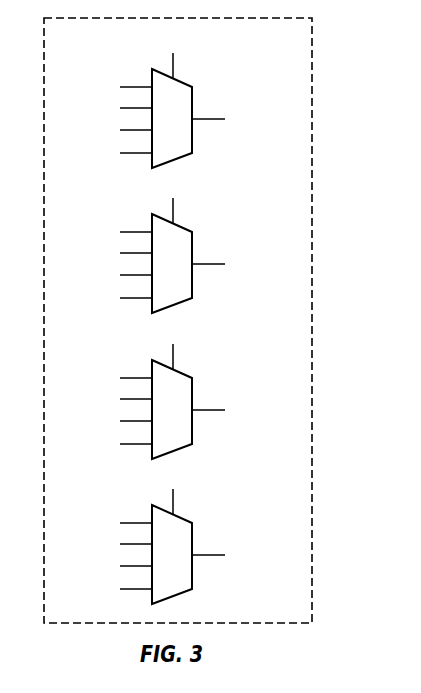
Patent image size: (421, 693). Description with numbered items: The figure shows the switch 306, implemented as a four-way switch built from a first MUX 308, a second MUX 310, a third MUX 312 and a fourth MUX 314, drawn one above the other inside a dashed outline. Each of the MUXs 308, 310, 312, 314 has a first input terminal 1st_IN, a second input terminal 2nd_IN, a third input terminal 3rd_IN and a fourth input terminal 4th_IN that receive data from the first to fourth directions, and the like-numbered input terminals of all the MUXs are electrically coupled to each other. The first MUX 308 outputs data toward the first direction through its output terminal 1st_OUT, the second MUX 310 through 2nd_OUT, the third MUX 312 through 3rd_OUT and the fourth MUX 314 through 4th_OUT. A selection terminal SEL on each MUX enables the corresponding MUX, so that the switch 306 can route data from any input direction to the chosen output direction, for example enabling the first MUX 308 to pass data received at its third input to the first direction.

The switch 306 is at (312, 321).
The first MUX 308 is at (188, 85).
The second MUX 310 is at (188, 230).
The third MUX 312 is at (188, 376).
The fourth MUX 314 is at (188, 521).